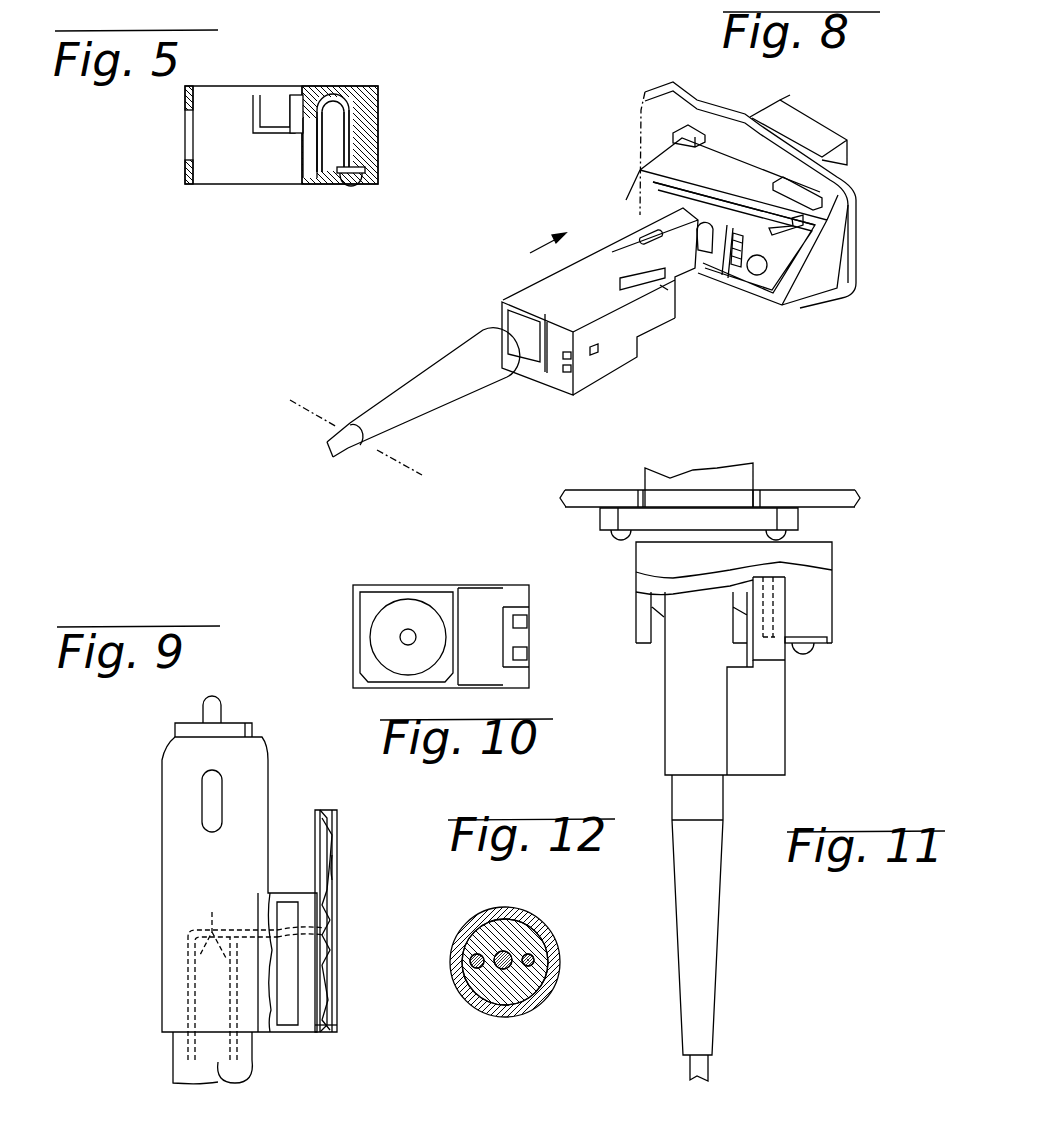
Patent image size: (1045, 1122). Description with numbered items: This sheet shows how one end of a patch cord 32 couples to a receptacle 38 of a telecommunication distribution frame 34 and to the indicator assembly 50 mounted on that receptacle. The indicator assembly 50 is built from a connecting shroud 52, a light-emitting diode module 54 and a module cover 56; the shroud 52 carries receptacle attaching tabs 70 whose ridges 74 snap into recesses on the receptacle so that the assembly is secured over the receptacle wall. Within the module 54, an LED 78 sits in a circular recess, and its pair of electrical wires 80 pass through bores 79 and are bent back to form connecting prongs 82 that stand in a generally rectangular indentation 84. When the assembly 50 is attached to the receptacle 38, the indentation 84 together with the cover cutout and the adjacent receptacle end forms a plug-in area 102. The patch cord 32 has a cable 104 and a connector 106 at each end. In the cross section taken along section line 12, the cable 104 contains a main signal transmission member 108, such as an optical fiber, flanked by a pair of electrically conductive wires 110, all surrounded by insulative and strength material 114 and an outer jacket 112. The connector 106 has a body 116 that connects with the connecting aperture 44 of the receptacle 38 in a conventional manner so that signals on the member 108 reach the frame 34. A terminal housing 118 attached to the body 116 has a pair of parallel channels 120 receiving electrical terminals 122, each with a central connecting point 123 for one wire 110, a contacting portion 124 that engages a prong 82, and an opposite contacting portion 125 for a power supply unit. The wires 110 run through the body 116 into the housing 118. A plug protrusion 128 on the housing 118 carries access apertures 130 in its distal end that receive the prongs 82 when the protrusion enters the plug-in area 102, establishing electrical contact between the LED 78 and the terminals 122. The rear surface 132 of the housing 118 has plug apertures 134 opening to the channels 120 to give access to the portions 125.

In FIG. 8, the section line 12 is at (290, 400).
In FIG. 8, the patch cord 32 is at (340, 413).
In FIG. 8, the telecommunication distribution frame 34 is at (848, 168).
In FIG. 11, the telecommunication distribution frame 34 is at (783, 490).
In FIG. 8, the receptacle 38 is at (739, 153).
In FIG. 11, the receptacle 38 is at (693, 482).
In FIG. 8, the connecting aperture 44 is at (716, 238).
In FIG. 8, the indicator assembly 50 is at (805, 308).
In FIG. 11, the indicator assembly 50 is at (843, 632).
In FIG. 5, the connecting shroud 52 is at (205, 187).
In FIG. 8, the connecting shroud 52 is at (641, 166).
In FIG. 11, the connecting shroud 52 is at (836, 585).
In FIG. 5, the light-emitting diode module 54 is at (368, 128).
In FIG. 5, the module cover 56 is at (303, 152).
In FIG. 5, the receptacle attaching tab 70 is at (277, 116).
In FIG. 5, the ridge 74 is at (253, 116).
In FIG. 5, the LED 78 is at (350, 188).
In FIG. 8, the LED 78 is at (758, 278).
In FIG. 11, the LED 78 is at (810, 652).
In FIG. 5, the bore 79 is at (352, 117).
In FIG. 5, the electrical wire 80 is at (348, 110).
In FIG. 5, the connecting prong 82 is at (320, 170).
In FIG. 11, the connecting prong 82 is at (785, 627).
In FIG. 5, the indentation 84 is at (335, 150).
In FIG. 8, the plug-in area 102 is at (715, 270).
In FIG. 8, the cable 104 is at (348, 446).
In FIG. 11, the cable 104 is at (702, 1068).
In FIG. 12, the cable 104 is at (490, 910).
In FIG. 8, the connector 106 is at (524, 276).
In FIG. 9, the connector 106 is at (150, 784).
In FIG. 11, the connector 106 is at (785, 782).
In FIG. 9, the main signal transmission member 108 is at (213, 704).
In FIG. 10, the main signal transmission member 108 is at (408, 629).
In FIG. 12, the main signal transmission member 108 is at (512, 968).
In FIG. 9, the electrically conductive wire 110 is at (232, 971).
In FIG. 12, the electrically conductive wire 110 is at (468, 961).
In FIG. 12, the jacket 112 is at (531, 953).
In FIG. 12, the insulative and strength material 114 is at (490, 990).
In FIG. 8, the body 116 is at (591, 247).
In FIG. 9, the body 116 is at (161, 880).
In FIG. 10, the body 116 is at (353, 585).
In FIG. 11, the body 116 is at (675, 693).
In FIG. 8, the terminal housing 118 is at (618, 369).
In FIG. 9, the terminal housing 118 is at (288, 1034).
In FIG. 10, the terminal housing 118 is at (378, 690).
In FIG. 11, the terminal housing 118 is at (787, 747).
In FIG. 9, the channel 120 is at (335, 868).
In FIG. 9, the electrical terminal 122 is at (330, 911).
In FIG. 9, the connecting point 123 is at (326, 932).
In FIG. 9, the contacting portion 124 is at (330, 841).
In FIG. 9, the contacting portion 125 is at (330, 976).
In FIG. 8, the plug protrusion 128 is at (673, 268).
In FIG. 9, the plug protrusion 128 is at (316, 820).
In FIG. 10, the plug protrusion 128 is at (510, 605).
In FIG. 11, the plug protrusion 128 is at (785, 600).
In FIG. 9, the access aperture 130 is at (325, 810).
In FIG. 10, the access aperture 130 is at (527, 651).
In FIG. 8, the rear surface 132 is at (557, 358).
In FIG. 8, the plug aperture 134 is at (567, 360).
In FIG. 9, the plug aperture 134 is at (328, 1034).